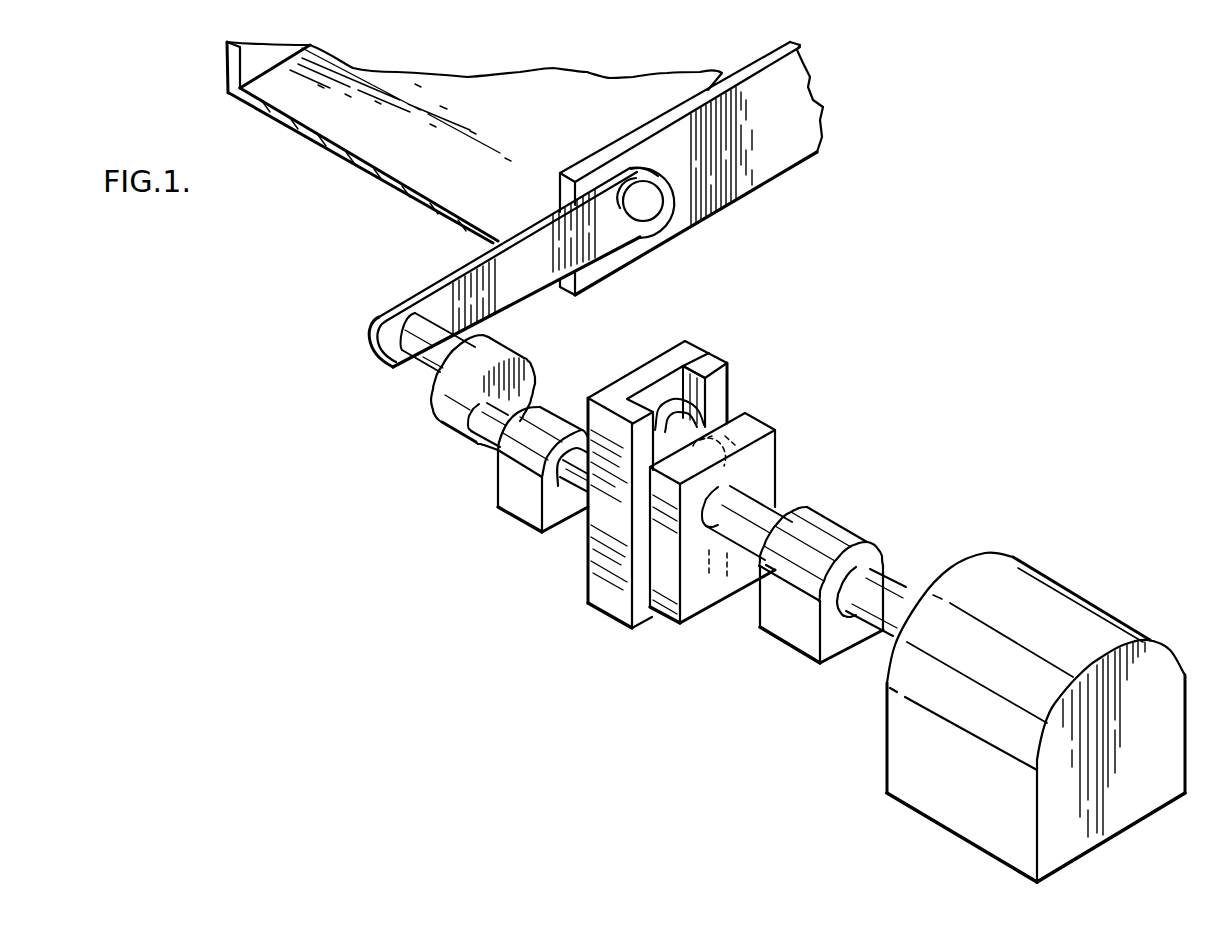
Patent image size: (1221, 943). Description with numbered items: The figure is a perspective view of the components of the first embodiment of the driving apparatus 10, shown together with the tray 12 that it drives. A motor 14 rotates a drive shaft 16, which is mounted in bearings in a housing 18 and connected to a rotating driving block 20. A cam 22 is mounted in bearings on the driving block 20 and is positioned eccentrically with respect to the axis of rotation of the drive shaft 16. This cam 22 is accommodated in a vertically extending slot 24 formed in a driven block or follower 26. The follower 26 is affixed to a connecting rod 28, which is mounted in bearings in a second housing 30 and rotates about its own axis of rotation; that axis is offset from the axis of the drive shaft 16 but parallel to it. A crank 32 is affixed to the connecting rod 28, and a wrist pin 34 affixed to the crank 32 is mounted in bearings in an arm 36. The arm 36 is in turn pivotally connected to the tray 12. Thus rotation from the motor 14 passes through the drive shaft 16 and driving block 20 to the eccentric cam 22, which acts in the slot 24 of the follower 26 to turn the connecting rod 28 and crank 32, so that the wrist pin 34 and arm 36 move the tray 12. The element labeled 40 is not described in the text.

The driving apparatus 10 is at (820, 420).
The tray 12 is at (373, 137).
The motor 14 is at (1077, 603).
The drive shaft 16 is at (896, 588).
The housing 18 is at (850, 532).
The driving block 20 is at (780, 464).
The cam 22 is at (666, 400).
The slot 24 is at (696, 383).
The follower 26 is at (600, 580).
The connecting rod 28 is at (573, 480).
The housing 30 is at (511, 473).
The crank 32 is at (443, 426).
The wrist pin 34 is at (430, 360).
The arm 36 is at (444, 267).
The shaft 40 is at (777, 523).